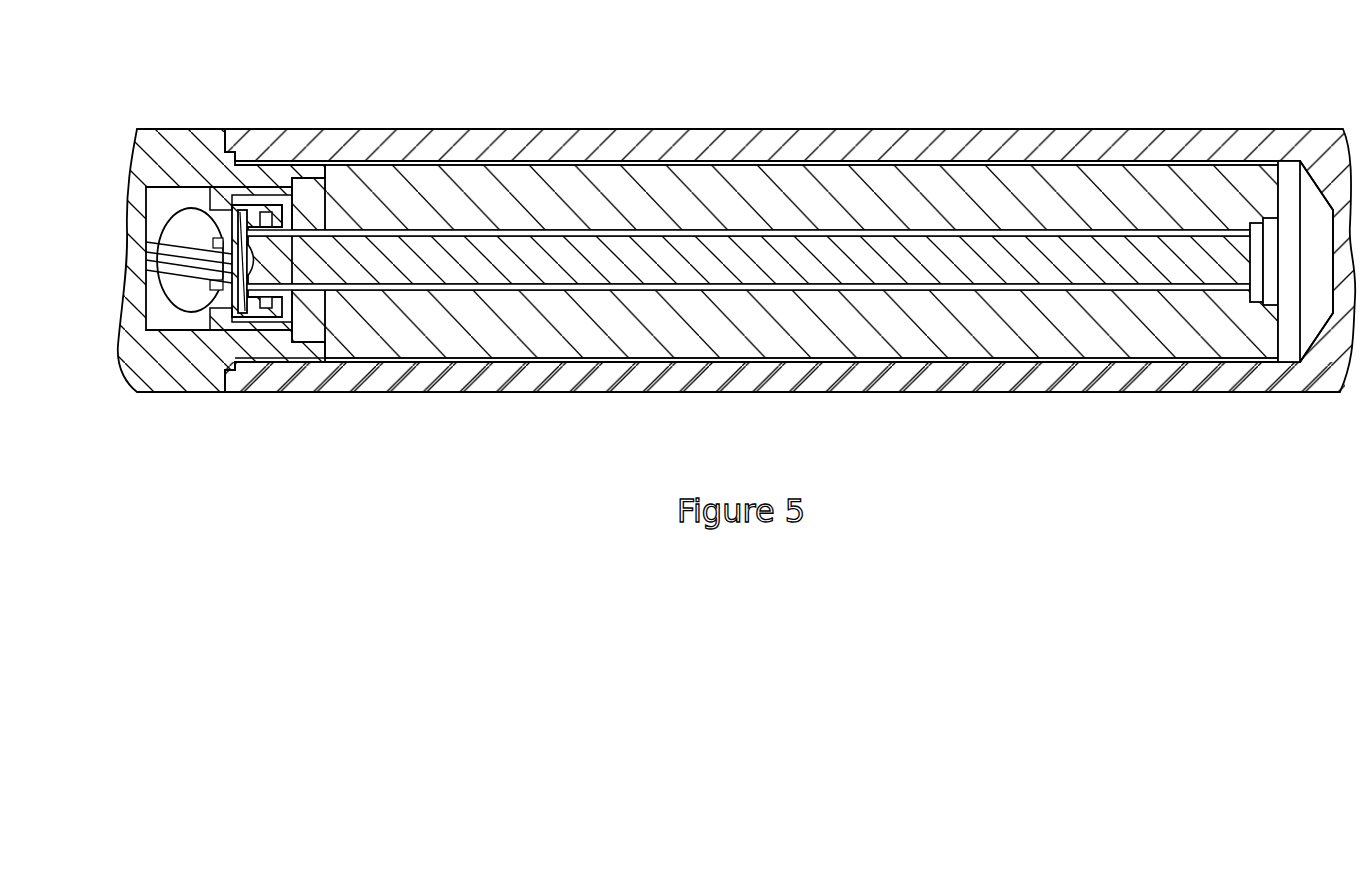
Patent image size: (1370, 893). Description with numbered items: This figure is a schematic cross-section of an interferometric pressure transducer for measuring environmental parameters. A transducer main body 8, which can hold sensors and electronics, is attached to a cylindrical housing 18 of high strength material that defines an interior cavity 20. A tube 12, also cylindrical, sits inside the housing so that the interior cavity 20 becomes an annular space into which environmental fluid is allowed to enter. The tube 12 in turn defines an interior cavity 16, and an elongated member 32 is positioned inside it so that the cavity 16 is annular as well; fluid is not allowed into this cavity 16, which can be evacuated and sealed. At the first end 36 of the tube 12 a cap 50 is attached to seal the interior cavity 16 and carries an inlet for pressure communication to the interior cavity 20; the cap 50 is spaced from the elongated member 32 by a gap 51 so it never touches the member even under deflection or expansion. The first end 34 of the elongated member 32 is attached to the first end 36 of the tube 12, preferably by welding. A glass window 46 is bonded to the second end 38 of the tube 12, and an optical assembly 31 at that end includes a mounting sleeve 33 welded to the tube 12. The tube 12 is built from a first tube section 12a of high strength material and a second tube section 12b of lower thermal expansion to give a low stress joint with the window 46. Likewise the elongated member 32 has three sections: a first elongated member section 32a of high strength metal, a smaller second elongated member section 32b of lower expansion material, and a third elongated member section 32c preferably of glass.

The transducer main body 8 is at (183, 138).
The tube 12 is at (1168, 196).
The first tube section 12a is at (1042, 339).
The second tube section 12b is at (278, 317).
The interior cavity 16 is at (884, 230).
The housing 18 is at (708, 140).
The interior cavity 20 is at (777, 161).
The optical assembly 31 is at (172, 316).
The elongated member 32 is at (1087, 258).
The first elongated member section 32a is at (542, 275).
The second elongated member section 32b is at (289, 270).
The third elongated member section 32c is at (252, 282).
The mounting sleeve 33 is at (265, 203).
The first end of the elongated member 34 is at (1236, 270).
The first end of the tube 36 is at (1263, 196).
The second end of the tube 38 is at (305, 207).
The window 46 is at (245, 208).
The cap 50 is at (1269, 306).
The gap 51 is at (1258, 304).